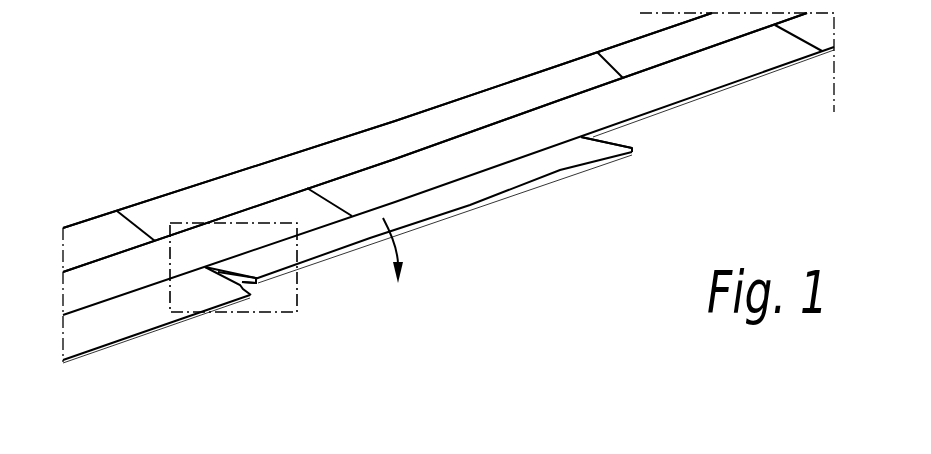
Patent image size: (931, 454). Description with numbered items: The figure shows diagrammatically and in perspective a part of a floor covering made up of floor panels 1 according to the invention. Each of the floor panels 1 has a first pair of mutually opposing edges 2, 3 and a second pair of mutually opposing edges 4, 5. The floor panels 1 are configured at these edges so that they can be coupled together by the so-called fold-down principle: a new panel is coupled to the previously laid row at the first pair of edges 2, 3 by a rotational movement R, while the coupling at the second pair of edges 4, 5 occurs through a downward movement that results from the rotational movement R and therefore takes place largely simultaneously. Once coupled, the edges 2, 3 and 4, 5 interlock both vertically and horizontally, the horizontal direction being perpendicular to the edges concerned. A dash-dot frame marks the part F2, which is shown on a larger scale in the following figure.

The floor panel 1 is at (351, 150).
The first edge of first pair of opposing edges 2 is at (195, 186).
The second edge of first pair of opposing edges 3 is at (655, 108).
The first edge of second pair of opposing edges 4 is at (613, 142).
The second edge of second pair of opposing edges 5 is at (242, 282).
The rotational movement R is at (398, 240).
The part shown on a larger scale in FIG. 2 F2 is at (263, 312).